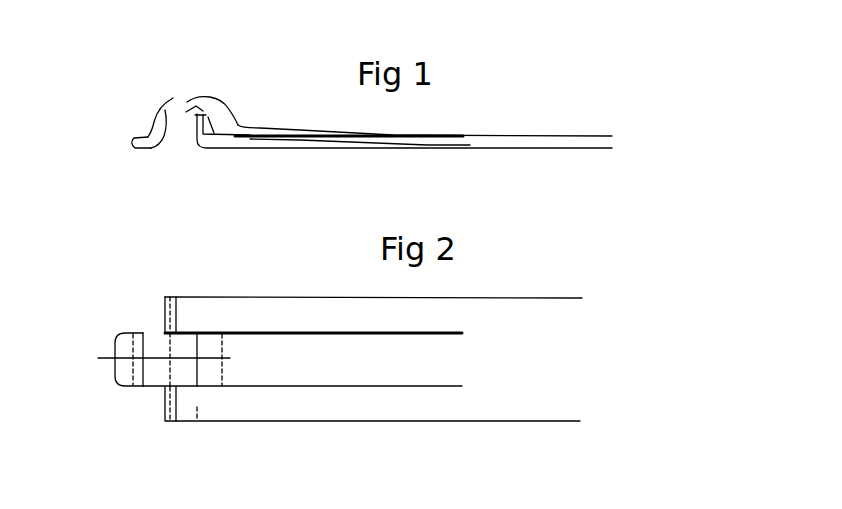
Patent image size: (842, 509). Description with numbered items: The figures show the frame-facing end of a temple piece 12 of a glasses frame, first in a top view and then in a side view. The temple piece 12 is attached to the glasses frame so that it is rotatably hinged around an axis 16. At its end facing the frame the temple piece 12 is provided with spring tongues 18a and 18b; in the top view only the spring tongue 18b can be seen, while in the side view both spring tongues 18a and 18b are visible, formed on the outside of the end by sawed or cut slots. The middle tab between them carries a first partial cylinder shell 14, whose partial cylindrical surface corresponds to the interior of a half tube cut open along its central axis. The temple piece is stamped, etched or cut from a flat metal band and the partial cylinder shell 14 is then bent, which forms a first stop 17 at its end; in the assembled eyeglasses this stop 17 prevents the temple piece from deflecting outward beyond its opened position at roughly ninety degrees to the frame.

In FIG. 1, the temple piece 12 is at (517, 138).
In FIG. 1, the first partial cylinder shell 14 is at (167, 117).
In FIG. 2, the first partial cylinder shell 14 is at (167, 387).
In FIG. 1, the axis 16 is at (203, 123).
In FIG. 1, the first stop 17 is at (135, 146).
In FIG. 2, the first stop 17 is at (125, 372).
In FIG. 2, the spring tongue 18a is at (232, 403).
In FIG. 1, the spring tongue 18b is at (242, 145).
In FIG. 2, the spring tongue 18b is at (233, 315).